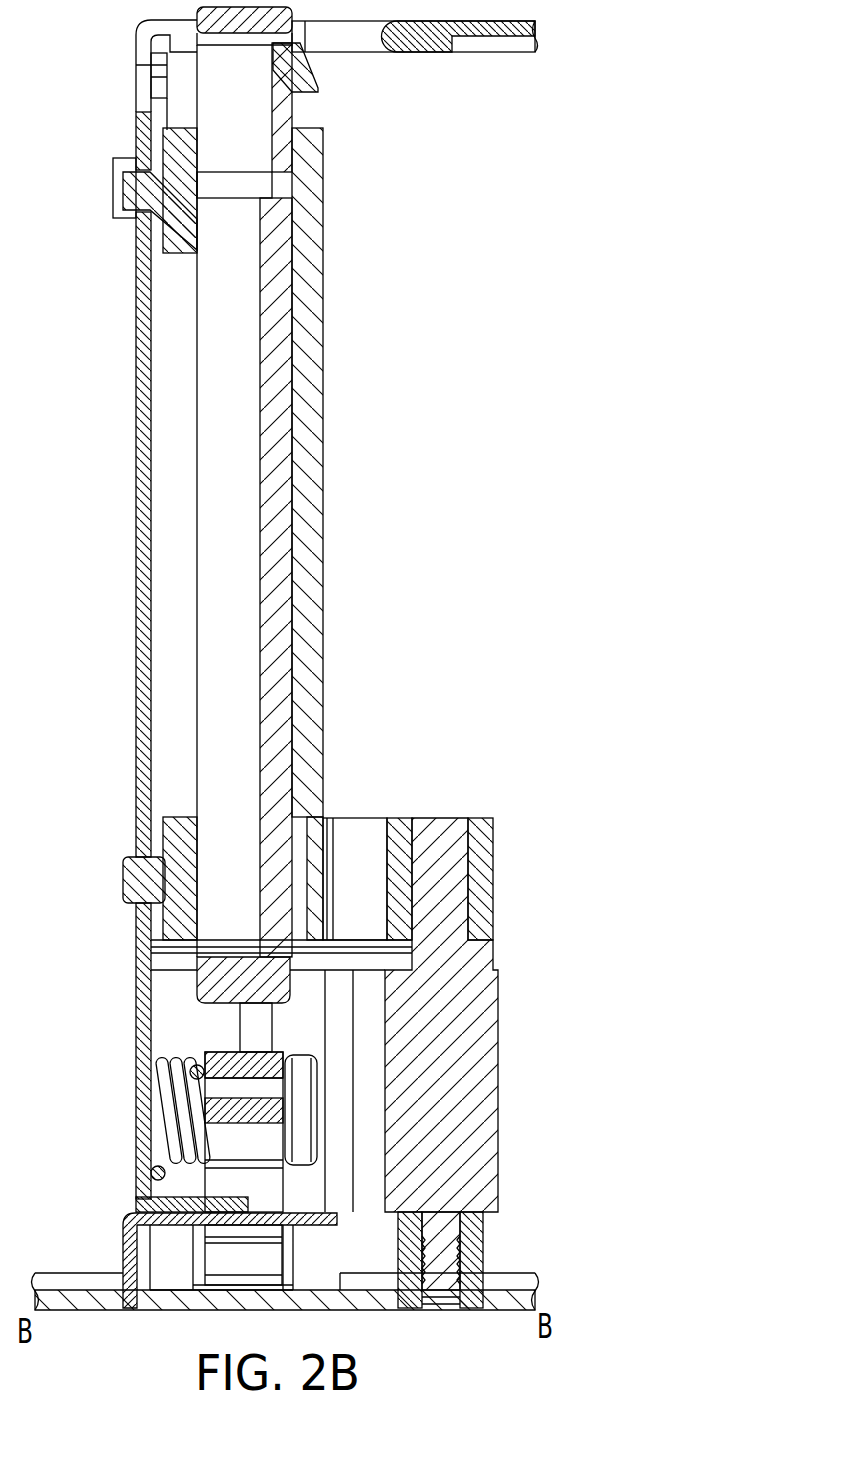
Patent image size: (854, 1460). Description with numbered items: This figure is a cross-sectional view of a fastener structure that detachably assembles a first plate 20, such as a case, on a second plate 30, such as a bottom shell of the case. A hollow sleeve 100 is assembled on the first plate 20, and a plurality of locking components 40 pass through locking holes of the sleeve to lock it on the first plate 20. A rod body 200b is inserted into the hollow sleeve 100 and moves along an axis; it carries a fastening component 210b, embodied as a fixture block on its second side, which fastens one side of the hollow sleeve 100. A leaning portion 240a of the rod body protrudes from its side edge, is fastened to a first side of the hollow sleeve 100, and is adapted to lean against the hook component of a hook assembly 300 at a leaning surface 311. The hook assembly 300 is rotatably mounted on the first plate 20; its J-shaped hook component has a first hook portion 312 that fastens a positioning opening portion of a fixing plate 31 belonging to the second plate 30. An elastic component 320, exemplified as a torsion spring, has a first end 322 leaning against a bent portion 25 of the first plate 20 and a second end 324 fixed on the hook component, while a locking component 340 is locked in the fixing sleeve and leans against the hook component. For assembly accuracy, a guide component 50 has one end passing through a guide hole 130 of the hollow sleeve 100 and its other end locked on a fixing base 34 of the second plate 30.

The first plate 20 is at (137, 133).
The locking component 40 is at (130, 192).
The rod body 200b is at (274, 358).
The fastening component 210b is at (318, 80).
The hollow sleeve 100 is at (313, 408).
The guide hole 130 is at (466, 821).
The guide component 50 is at (498, 1062).
The leaning portion 240a is at (205, 992).
The hook assembly 300 is at (302, 1038).
The leaning surface 311 is at (225, 1051).
The elastic component 320 is at (170, 1108).
The second end 324 is at (190, 1073).
The first end 322 is at (151, 1173).
The locking component 340 is at (315, 1108).
The bent portion 25 is at (170, 1200).
The fixing plate 31 is at (130, 1232).
The first hook portion 312 is at (235, 1260).
The fixing base 34 is at (482, 1245).
The second plate 30 is at (78, 1302).